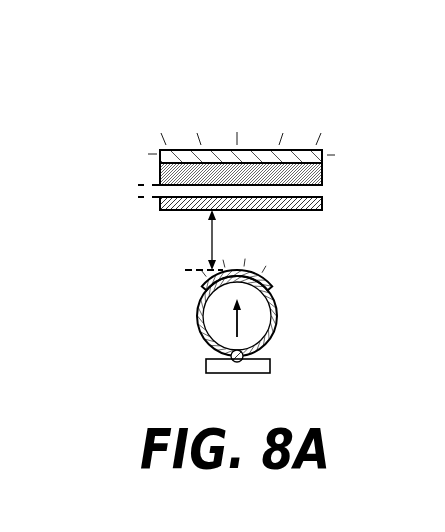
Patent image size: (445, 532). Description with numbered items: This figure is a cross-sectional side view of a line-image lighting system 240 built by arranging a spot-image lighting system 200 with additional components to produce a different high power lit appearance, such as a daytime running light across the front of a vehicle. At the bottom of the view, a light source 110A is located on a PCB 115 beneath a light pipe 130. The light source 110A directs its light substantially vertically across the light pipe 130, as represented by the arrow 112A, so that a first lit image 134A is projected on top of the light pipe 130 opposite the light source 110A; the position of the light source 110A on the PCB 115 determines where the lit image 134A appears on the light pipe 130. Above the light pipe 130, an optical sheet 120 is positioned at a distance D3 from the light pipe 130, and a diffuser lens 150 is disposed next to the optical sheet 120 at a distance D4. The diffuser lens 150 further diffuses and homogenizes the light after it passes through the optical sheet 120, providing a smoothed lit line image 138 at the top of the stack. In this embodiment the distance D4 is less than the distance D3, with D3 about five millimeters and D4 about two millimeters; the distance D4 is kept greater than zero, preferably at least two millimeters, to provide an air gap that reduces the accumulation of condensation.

The line-image lighting system 240 is at (233, 120).
The smoothed lit line image 138 is at (162, 153).
The diffuser lens 150 is at (322, 173).
The optical sheet 120 is at (322, 202).
The distance between optical sheet and diffuser lens D4 is at (119, 188).
The distance between optical sheet and light pipe D3 is at (198, 240).
The spot-image lighting system 200 is at (138, 303).
The light pipe 130 is at (278, 331).
The first lit image 134A is at (268, 279).
The arrow indicating light direction 112A is at (240, 323).
The light source 110A is at (229, 355).
The PCB 115 is at (265, 366).